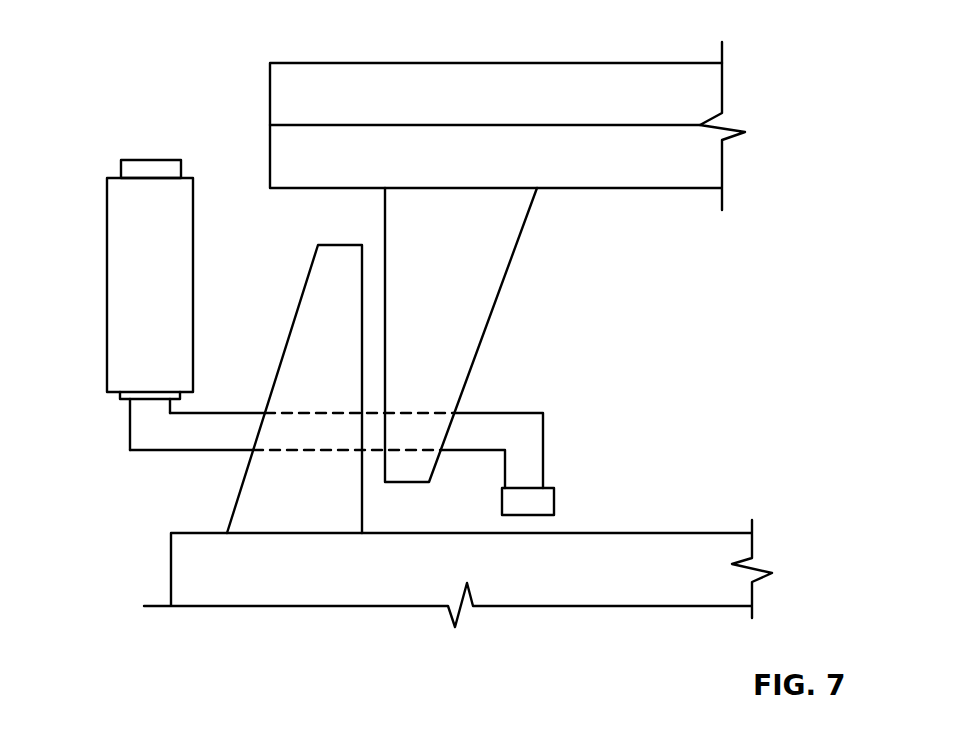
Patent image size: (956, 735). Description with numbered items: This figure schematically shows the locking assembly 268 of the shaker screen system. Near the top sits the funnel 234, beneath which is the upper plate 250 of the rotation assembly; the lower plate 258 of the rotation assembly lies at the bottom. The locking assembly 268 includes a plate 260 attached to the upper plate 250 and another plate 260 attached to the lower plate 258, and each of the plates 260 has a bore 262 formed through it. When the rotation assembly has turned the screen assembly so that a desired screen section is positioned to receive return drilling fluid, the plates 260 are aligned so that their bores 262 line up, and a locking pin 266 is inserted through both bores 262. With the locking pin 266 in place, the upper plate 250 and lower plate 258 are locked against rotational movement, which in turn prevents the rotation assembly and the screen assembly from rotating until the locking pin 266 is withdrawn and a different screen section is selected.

The funnel 234 is at (620, 75).
The upper plate 250 is at (665, 180).
The lower plate 258 is at (680, 597).
The plate 260 is at (513, 260).
The bore 262 is at (298, 412).
The locking pin 266 is at (118, 429).
The locking assembly 268 is at (556, 372).